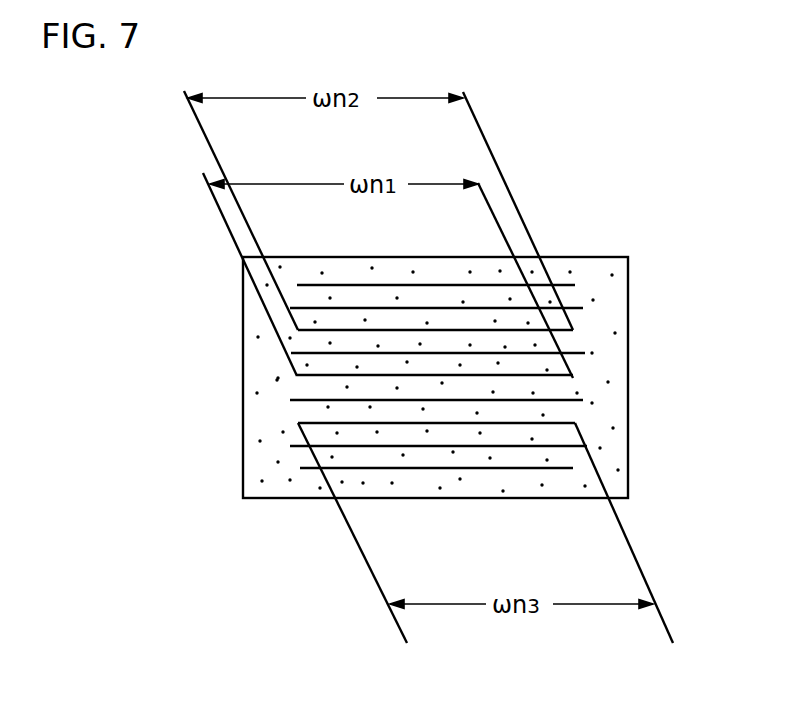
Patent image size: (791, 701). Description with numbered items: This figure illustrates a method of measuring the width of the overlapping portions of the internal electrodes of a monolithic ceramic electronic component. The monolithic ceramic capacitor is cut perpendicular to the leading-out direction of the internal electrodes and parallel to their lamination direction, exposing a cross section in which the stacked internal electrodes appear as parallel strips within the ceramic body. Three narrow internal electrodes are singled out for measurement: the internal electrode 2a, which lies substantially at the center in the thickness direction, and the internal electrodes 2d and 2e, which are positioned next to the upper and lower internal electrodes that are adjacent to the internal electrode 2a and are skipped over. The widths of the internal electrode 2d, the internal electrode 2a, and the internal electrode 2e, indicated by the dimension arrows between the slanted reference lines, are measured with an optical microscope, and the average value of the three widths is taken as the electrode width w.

The internal electrode 2d is at (347, 330).
The internal electrode 2a is at (436, 378).
The internal electrode 2e is at (518, 423).